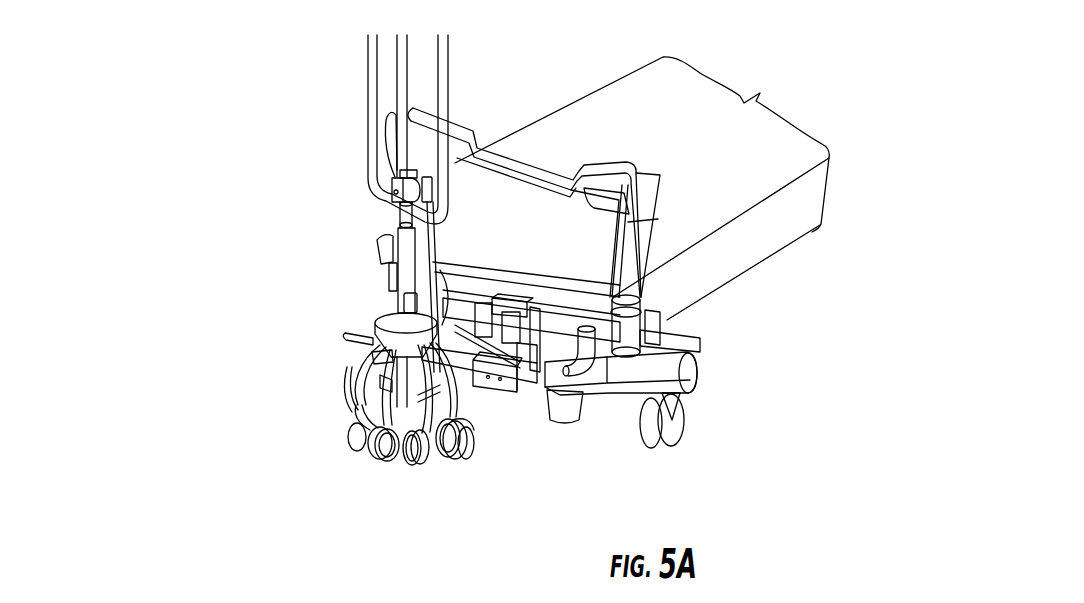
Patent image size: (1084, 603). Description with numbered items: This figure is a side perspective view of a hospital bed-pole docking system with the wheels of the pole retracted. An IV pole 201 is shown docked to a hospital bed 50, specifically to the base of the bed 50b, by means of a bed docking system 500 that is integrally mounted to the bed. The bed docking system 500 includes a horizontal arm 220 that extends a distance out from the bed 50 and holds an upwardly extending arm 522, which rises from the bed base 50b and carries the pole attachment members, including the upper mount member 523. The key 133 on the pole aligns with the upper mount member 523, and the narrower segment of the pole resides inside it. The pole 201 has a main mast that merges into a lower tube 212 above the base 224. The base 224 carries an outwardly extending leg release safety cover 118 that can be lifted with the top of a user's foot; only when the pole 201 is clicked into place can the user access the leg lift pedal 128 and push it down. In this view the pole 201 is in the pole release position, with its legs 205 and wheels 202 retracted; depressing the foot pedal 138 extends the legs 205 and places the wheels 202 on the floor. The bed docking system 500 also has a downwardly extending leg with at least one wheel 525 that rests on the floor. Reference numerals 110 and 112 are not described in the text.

The IV pole 201 is at (352, 113).
The upper mount member 523 is at (421, 177).
The bed docking system 500 is at (437, 239).
The hospital bed 50 is at (563, 236).
The key 133 is at (392, 188).
The lower tube 212 is at (403, 273).
The upwardly extending arm 522 is at (453, 308).
The leg release safety cover 118 is at (294, 333).
The leg lift pedal 128 is at (362, 337).
The base 224 is at (363, 352).
The foot pedal 138 is at (377, 370).
The legs 205 is at (360, 422).
The wheels 202 is at (462, 430).
The wheel 525 is at (488, 427).
The horizontal arm 220 is at (480, 378).
The support column 110 is at (600, 300).
The cart base 112 is at (563, 383).
The base of the bed 50b is at (663, 338).